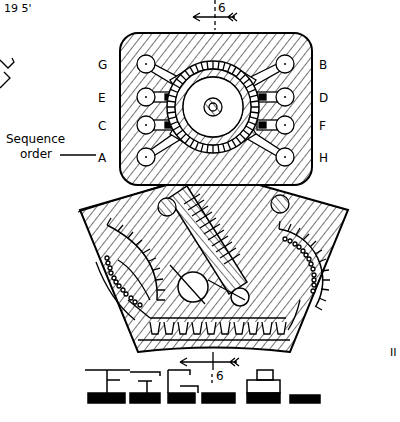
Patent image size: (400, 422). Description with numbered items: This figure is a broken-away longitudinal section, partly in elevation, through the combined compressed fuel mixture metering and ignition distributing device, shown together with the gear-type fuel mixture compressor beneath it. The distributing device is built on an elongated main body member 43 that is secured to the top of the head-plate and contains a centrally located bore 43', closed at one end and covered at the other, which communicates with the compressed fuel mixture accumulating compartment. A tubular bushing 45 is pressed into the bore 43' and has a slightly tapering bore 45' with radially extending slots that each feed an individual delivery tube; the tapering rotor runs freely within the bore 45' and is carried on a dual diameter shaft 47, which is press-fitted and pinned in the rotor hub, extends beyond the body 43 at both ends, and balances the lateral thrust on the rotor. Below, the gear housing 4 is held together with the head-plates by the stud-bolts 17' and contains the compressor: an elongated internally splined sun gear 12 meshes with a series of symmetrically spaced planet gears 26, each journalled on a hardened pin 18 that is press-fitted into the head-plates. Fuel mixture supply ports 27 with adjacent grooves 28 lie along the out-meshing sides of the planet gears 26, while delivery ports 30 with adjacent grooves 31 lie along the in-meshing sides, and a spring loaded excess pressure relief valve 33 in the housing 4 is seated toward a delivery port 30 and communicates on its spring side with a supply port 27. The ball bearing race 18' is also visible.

The gear housing 4 is at (82, 230).
The compressor drive sun-gear 12 is at (138, 334).
The stud-bolts 17' is at (187, 198).
The planet-gearing journal pins 18 is at (109, 280).
The ball bearing 18' is at (101, 281).
The planet gears 26 is at (104, 238).
The fuel mixture supply ports 27 is at (118, 282).
The elongated grooves 28 is at (128, 310).
The fuel mixture delivery ports 30 is at (312, 292).
The elongated grooves 31 is at (296, 322).
The excess pressure relief valve 33 is at (242, 244).
The main body member 43 is at (216, 96).
The centrally located bore 43' is at (215, 85).
The tubular bushing 45 is at (214, 80).
The tapering bore 45' is at (208, 240).
The dual diameter shaft 47 is at (213, 101).